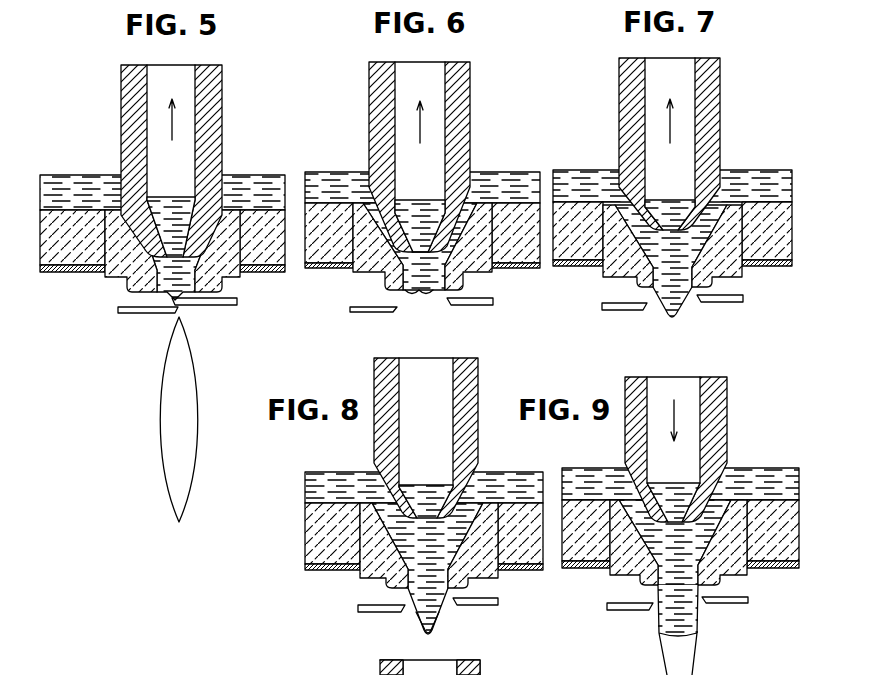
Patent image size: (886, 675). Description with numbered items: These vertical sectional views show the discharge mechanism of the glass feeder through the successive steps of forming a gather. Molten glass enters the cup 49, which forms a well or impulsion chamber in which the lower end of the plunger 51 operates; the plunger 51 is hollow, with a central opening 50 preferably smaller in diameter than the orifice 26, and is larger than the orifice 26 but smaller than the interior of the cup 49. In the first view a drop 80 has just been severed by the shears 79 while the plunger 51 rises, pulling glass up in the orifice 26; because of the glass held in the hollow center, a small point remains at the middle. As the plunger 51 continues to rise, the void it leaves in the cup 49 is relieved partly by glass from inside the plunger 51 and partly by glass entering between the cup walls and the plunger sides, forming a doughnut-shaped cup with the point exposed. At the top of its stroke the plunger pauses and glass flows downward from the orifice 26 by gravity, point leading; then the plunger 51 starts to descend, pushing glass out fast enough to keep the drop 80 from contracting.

In FIG. 5, the orifice 26 is at (159, 288).
In FIG. 6, the orifice 26 is at (420, 272).
In FIG. 7, the orifice 26 is at (677, 272).
In FIG. 8, the orifice 26 is at (459, 568).
In FIG. 9, the orifice 26 is at (703, 550).
In FIG. 5, the cup 49 is at (150, 268).
In FIG. 6, the cup 49 is at (407, 257).
In FIG. 7, the cup 49 is at (651, 259).
In FIG. 8, the cup 49 is at (407, 558).
In FIG. 9, the cup 49 is at (657, 562).
In FIG. 5, the opening 50 is at (171, 212).
In FIG. 6, the opening 50 is at (420, 209).
In FIG. 7, the opening 50 is at (670, 195).
In FIG. 8, the opening 50 is at (426, 477).
In FIG. 9, the opening 50 is at (673, 486).
In FIG. 5, the plunger 51 is at (192, 161).
In FIG. 6, the plunger 51 is at (440, 157).
In FIG. 7, the plunger 51 is at (690, 144).
In FIG. 8, the plunger 51 is at (446, 438).
In FIG. 9, the plunger 51 is at (699, 449).
In FIG. 5, the shears 79 is at (177, 318).
In FIG. 6, the shears 79 is at (428, 319).
In FIG. 7, the shears 79 is at (693, 313).
In FIG. 8, the shears 79 is at (448, 618).
In FIG. 9, the shears 79 is at (681, 618).
In FIG. 5, the drop 80 is at (159, 419).
In FIG. 8, the drop 80 is at (453, 626).
In FIG. 9, the drop 80 is at (701, 630).